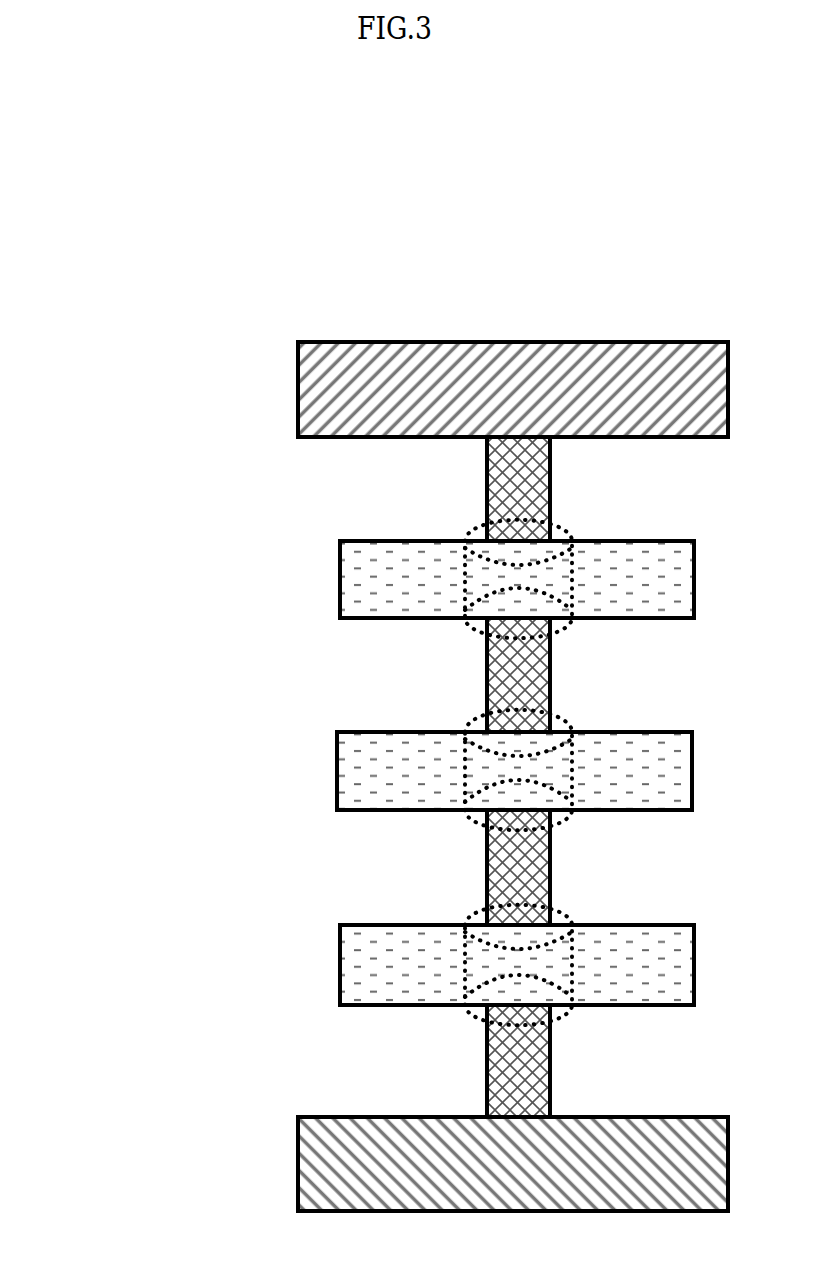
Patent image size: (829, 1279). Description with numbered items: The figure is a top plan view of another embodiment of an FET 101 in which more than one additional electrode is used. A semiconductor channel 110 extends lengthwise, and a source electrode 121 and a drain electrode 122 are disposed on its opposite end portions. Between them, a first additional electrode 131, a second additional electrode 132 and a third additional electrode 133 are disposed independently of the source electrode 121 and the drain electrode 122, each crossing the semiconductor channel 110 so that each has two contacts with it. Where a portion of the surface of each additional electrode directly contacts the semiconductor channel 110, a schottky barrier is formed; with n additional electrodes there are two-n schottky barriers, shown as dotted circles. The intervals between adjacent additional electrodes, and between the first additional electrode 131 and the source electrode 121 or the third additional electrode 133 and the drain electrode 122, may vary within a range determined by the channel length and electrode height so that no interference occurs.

The capacitor / stacked electrode assembly 101 is at (232, 278).
The semiconductor channel 110 is at (487, 502).
The source electrode 121 is at (298, 390).
The drain electrode 122 is at (298, 1170).
The first additional electrode 131 is at (340, 582).
The second additional electrode 132 is at (337, 768).
The third additional electrode 133 is at (340, 963).